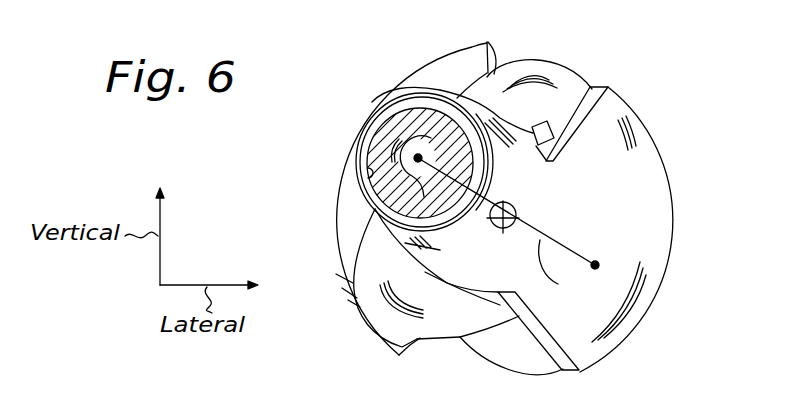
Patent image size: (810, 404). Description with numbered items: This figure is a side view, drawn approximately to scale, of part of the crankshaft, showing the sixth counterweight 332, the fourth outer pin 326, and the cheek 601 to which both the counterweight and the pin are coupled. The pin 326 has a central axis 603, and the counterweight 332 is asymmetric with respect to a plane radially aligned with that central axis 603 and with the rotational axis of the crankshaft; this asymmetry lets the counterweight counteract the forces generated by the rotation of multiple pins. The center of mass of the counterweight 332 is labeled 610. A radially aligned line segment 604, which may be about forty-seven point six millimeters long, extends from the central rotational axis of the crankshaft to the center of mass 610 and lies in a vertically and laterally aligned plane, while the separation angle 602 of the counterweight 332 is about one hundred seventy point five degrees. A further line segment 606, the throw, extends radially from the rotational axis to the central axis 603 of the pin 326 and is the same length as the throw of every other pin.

The fourth outer pin 326 is at (362, 148).
The cheek 601 is at (420, 264).
The separation angle 602 is at (505, 204).
The central axis 603 is at (385, 201).
The line segment 604 is at (571, 274).
The line segment 606 is at (452, 108).
The center of mass 610 is at (598, 263).
The sixth counterweight 332 is at (648, 142).